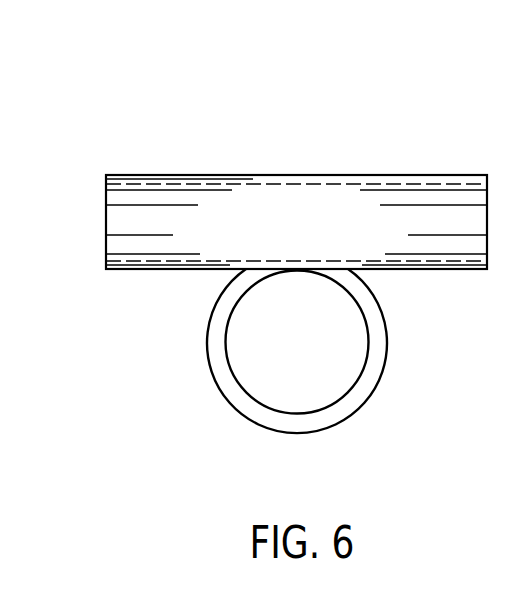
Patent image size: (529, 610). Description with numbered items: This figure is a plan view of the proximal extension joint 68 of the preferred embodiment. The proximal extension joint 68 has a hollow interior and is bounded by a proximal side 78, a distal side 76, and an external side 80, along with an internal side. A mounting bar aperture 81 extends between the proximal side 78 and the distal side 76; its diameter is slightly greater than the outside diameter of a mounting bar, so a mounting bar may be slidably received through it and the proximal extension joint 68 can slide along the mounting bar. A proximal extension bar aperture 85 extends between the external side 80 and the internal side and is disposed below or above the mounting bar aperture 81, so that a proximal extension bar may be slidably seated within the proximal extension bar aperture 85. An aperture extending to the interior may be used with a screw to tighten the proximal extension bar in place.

The proximal extension joint 68 is at (373, 162).
The distal side 76 is at (487, 200).
The proximal side 78 is at (105, 223).
The mounting bar aperture 81 is at (463, 223).
The external side 80 is at (335, 378).
The proximal extension bar aperture 85 is at (298, 411).